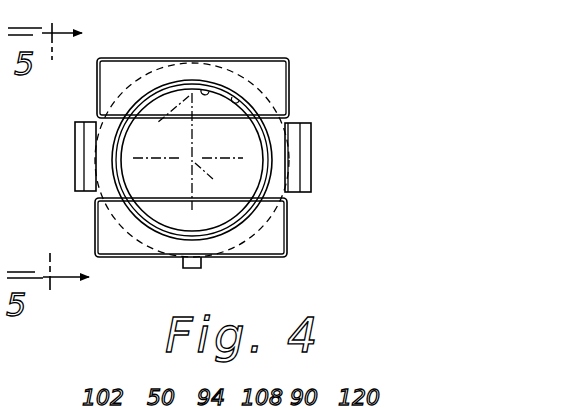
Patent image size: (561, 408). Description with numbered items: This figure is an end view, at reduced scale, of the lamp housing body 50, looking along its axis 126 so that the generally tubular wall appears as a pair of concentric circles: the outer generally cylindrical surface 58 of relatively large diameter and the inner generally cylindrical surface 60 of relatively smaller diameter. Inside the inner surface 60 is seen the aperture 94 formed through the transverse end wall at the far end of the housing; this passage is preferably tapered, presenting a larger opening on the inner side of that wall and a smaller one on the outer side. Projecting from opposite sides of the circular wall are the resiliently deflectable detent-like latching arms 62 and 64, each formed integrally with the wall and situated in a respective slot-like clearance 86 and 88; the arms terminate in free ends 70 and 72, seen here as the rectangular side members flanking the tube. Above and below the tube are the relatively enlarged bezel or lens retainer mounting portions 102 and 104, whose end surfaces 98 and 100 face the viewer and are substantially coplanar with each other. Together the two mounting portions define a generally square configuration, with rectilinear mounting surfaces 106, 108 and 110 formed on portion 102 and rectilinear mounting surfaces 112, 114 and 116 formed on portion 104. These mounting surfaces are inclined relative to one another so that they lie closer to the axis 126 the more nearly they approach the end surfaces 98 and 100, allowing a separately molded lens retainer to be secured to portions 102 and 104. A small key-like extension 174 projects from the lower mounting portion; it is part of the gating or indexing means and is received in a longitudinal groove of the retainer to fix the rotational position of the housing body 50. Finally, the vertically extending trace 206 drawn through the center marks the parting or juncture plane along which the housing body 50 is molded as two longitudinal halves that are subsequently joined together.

The housing body 50 is at (270, 92).
The outer cylindrical surface 58 is at (121, 256).
The inner cylindrical surface 60 is at (238, 100).
The latching arm 62 is at (72, 157).
The latching arm 64 is at (318, 153).
The free end 70 is at (78, 138).
The free end 72 is at (296, 177).
The slot-like clearance 86 is at (118, 117).
The slot-like clearance 88 is at (291, 118).
The aperture 94 is at (207, 92).
The end surface 98 is at (122, 68).
The end surface 100 is at (287, 253).
The bezel or lens retainer mounting portion 102 is at (290, 54).
The bezel or lens retainer mounting portion 104 is at (273, 263).
The rectilinear mounting surface 106 is at (97, 72).
The rectilinear mounting surface 108 is at (168, 62).
The rectilinear mounting surface 110 is at (291, 76).
The rectilinear mounting surface 112 is at (96, 209).
The rectilinear mounting surface 114 is at (163, 258).
The rectilinear mounting surface 116 is at (288, 235).
The axis 126 is at (225, 181).
The key-like extension 174 is at (206, 268).
The trace of parting plane 206 is at (188, 151).